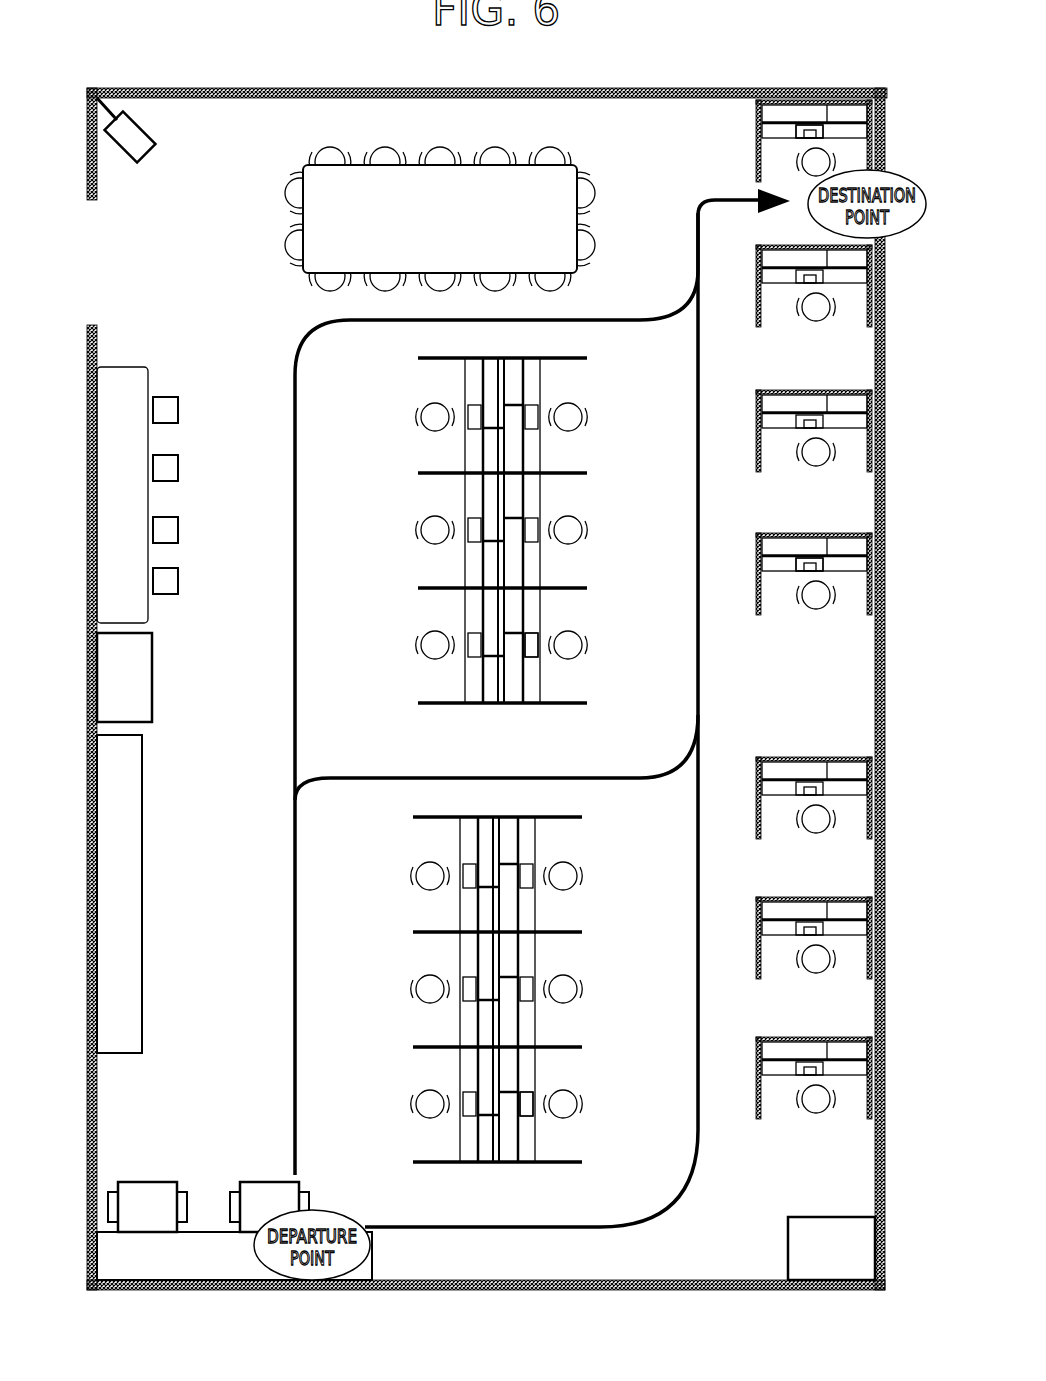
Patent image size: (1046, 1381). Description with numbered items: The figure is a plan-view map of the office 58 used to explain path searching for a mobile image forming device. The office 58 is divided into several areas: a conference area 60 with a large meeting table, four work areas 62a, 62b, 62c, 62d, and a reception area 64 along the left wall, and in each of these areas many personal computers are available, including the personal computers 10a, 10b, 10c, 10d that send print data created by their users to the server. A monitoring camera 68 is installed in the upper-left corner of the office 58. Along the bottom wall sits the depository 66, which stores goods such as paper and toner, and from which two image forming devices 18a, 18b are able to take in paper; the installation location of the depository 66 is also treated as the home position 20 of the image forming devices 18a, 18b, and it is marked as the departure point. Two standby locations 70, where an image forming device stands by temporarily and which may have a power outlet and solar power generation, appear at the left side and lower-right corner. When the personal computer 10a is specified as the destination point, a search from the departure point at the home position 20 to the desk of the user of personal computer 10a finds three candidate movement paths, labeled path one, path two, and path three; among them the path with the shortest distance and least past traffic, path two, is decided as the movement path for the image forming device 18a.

The office 58 is at (688, 44).
The monitoring camera 68 is at (150, 122).
The conference area 60 is at (594, 163).
The work area 62a is at (598, 975).
The work area 62b is at (612, 468).
The work area 62c is at (817, 746).
The work area 62d is at (733, 177).
The personal computer 10a is at (823, 127).
The personal computer 10b is at (540, 636).
The personal computer 10c is at (823, 560).
The personal computer 10d is at (536, 1094).
The reception area 64 is at (200, 428).
The standby location 70 is at (153, 660).
The depository 66 is at (208, 1289).
The home position 20 is at (137, 1265).
The image forming device 18a is at (272, 1181).
The image forming device 18b is at (151, 1181).